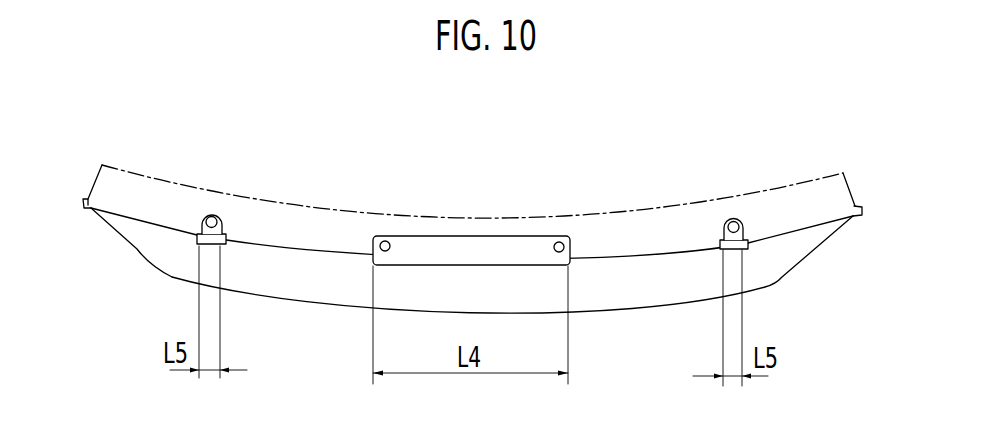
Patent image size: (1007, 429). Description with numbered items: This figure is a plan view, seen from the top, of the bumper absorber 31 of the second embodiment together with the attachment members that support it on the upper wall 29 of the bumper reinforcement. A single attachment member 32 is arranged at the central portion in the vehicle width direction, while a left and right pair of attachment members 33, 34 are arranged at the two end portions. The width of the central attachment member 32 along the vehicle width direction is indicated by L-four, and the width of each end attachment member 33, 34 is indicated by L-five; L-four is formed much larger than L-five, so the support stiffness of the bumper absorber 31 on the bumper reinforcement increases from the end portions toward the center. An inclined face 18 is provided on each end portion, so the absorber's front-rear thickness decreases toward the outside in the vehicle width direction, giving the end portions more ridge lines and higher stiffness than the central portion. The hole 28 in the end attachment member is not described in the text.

The inclined face 18 is at (798, 265).
The mounting hole 28 is at (733, 224).
The upper wall 29 is at (280, 212).
The bumper absorber 31 is at (142, 252).
The attachment member 32 is at (477, 248).
The attachment member 33 is at (218, 229).
The attachment member 34 is at (740, 238).